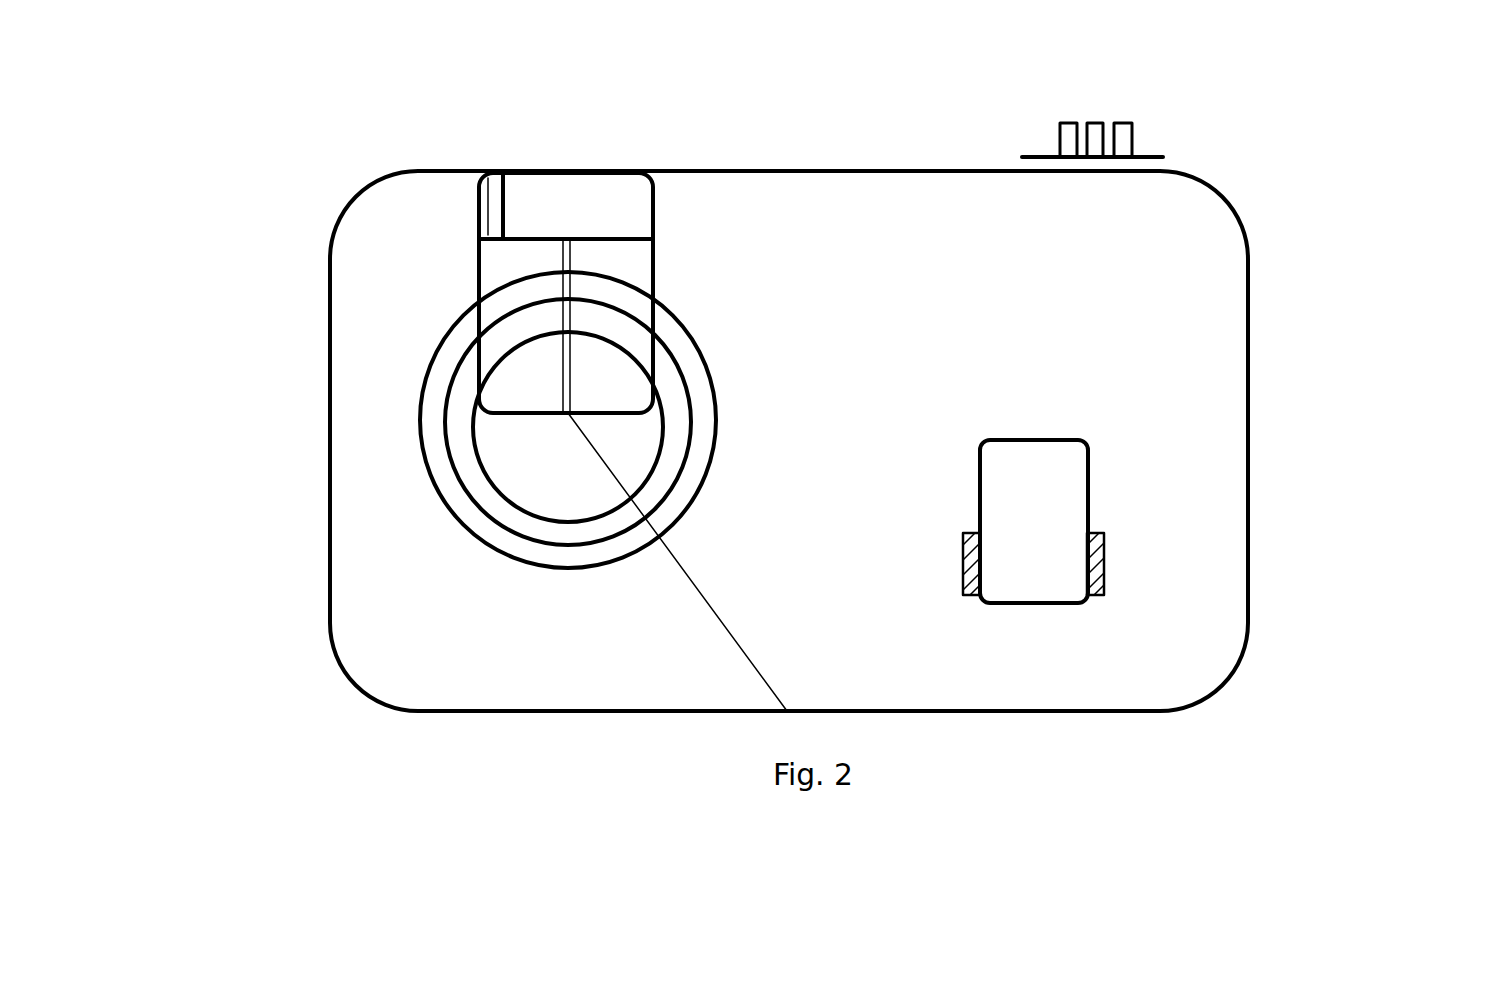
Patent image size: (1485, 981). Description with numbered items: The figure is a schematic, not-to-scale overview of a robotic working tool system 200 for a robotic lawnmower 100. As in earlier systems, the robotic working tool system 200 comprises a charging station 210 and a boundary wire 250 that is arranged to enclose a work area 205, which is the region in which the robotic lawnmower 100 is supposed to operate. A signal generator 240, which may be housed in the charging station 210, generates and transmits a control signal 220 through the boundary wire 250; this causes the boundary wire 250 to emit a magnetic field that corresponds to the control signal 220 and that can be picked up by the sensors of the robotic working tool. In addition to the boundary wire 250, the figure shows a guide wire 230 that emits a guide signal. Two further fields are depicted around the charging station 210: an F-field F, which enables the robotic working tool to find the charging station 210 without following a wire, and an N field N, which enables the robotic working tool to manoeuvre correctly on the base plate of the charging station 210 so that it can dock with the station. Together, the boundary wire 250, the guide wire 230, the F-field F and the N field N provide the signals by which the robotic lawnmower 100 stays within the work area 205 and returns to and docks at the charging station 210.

The robotic lawnmower 100 is at (1034, 498).
The robotic working tool system 200 is at (1274, 346).
The work area 205 is at (392, 636).
The charging station 210 is at (478, 283).
The control signal 220 is at (1058, 148).
The guide wire 230 is at (768, 680).
The signal generator 240 is at (497, 225).
The boundary wire 250 is at (330, 437).
The F-field F is at (418, 387).
The N field N is at (575, 317).